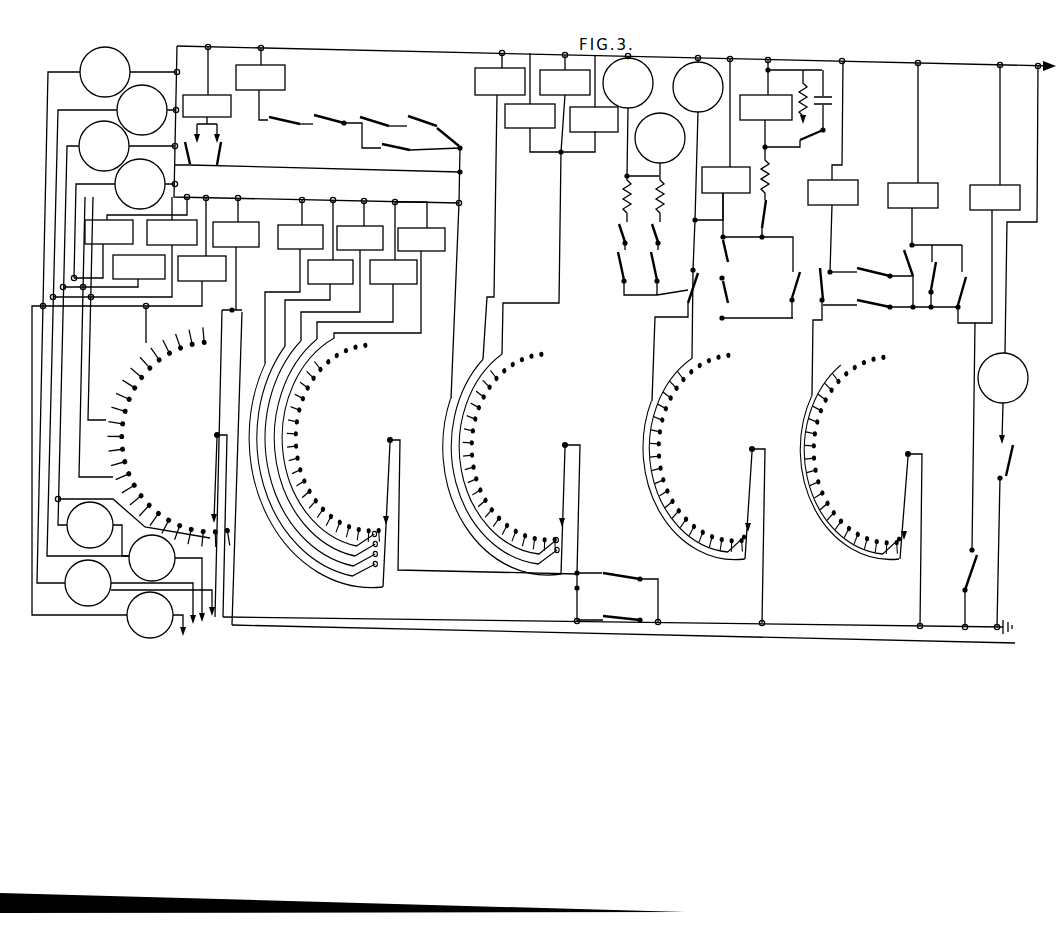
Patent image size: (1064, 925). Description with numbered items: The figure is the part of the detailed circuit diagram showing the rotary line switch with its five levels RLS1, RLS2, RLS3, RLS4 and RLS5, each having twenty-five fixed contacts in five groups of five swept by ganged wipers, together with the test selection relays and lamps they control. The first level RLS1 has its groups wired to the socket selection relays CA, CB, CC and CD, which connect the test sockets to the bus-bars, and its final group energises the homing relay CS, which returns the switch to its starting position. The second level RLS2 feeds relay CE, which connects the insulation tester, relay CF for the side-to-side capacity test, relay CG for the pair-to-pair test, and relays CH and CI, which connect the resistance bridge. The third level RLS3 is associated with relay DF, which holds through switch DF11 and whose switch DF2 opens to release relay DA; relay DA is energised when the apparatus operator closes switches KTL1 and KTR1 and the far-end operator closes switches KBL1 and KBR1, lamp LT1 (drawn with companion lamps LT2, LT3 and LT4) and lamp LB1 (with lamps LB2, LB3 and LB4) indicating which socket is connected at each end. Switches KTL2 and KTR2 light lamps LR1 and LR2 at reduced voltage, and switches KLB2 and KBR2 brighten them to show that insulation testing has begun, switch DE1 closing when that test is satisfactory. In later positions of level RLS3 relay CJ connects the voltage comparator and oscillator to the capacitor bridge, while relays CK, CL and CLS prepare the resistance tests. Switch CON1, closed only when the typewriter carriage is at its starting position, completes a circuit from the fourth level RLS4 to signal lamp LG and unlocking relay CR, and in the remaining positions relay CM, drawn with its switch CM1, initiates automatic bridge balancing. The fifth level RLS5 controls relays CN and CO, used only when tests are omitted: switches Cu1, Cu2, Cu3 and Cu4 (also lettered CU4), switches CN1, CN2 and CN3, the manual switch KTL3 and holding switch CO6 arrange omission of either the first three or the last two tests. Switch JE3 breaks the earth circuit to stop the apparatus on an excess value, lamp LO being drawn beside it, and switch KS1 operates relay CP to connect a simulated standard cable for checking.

The lamp LT1 is at (124, 218).
The lamp LT2 is at (116, 323).
The lamp LT3 is at (111, 320).
The lamp LT4 is at (107, 315).
The relay DA is at (260, 84).
The relay DF is at (207, 95).
The contact DE1 is at (317, 163).
The switch DF11 is at (242, 153).
The switch KTL1 is at (290, 131).
The switch KTR1 is at (347, 131).
The switch KBL1 is at (380, 112).
The switch KBR1 is at (429, 113).
The contact CN1 is at (418, 157).
The switch DF2 is at (454, 262).
The socket selection relay CA is at (109, 232).
The socket selection relay CB is at (139, 267).
The socket selection relay CC is at (172, 232).
The socket selection relay CD is at (202, 268).
The homing relay CS is at (236, 423).
The relay CE is at (294, 294).
The relay CF is at (319, 303).
The relay CG is at (342, 283).
The relay CH is at (367, 299).
The relay CI is at (389, 283).
The first level of rotary line switch RLS1 is at (169, 472).
The second level of rotary line switch RLS2 is at (413, 463).
The third level of rotary line switch RLS3 is at (511, 486).
The fourth level of rotary line switch RLS4 is at (704, 488).
The fifth level of rotary line switch RLS5 is at (861, 490).
The lamp LB1 is at (98, 529).
The lamp LB2 is at (167, 578).
The lamp LB3 is at (140, 592).
The lamp LB4 is at (156, 615).
The relay CJ is at (500, 206).
The relay CL is at (546, 204).
The relay CK is at (550, 102).
The relay CLS is at (594, 94).
The lamp LR1 is at (631, 139).
The lamp LR2 is at (660, 167).
The signal lamp LG is at (698, 208).
The switch KTL2 is at (619, 229).
The switch KLB2 is at (620, 248).
The switch KTR2 is at (620, 271).
The switch KBR2 is at (648, 284).
The switch CON1 is at (651, 337).
The unlocking relay CR is at (726, 126).
The relay CM is at (781, 130).
The contact CM1 is at (817, 114).
The switch CU4 is at (763, 236).
The switch CN3 is at (779, 295).
The switch Cu4 is at (780, 306).
The relay CN is at (833, 168).
The switch Cu1 is at (873, 277).
The switch Cu2 is at (908, 295).
The relay CO is at (925, 155).
The switch CO6 is at (943, 268).
The switch KTL3 is at (955, 397).
The relay CP is at (995, 194).
The lamp LO is at (1008, 255).
The switch JE3 is at (1022, 536).
The switch KS1 is at (954, 587).
The switch CN2 is at (630, 584).
The switch Cu3 is at (621, 608).